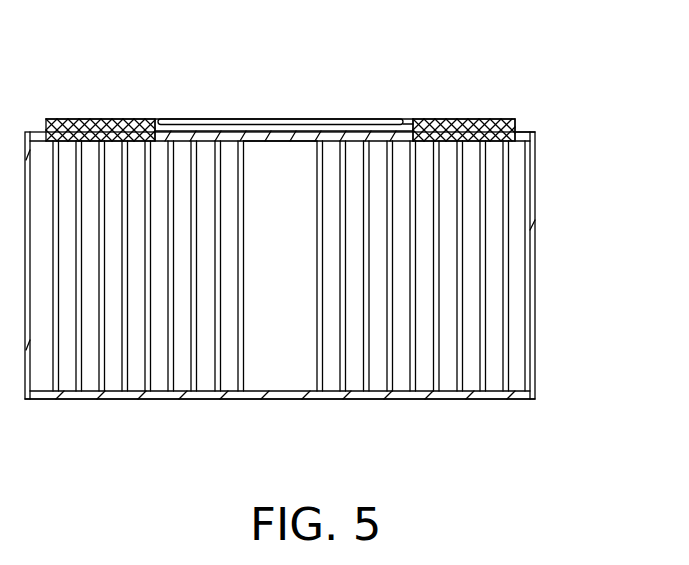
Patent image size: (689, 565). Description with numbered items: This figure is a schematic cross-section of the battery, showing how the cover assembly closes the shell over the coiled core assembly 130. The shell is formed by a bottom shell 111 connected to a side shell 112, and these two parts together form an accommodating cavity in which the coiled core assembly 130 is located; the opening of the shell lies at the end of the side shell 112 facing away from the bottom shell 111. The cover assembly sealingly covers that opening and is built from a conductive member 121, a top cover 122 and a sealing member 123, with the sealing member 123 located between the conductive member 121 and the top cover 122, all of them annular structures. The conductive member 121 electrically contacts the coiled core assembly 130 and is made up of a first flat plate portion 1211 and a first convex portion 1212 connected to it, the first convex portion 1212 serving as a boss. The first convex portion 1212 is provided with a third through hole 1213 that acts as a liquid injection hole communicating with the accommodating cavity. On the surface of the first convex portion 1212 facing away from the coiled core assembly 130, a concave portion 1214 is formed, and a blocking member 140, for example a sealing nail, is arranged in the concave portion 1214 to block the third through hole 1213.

The bottom shell 111 is at (338, 402).
The side shell 112 is at (535, 285).
The conductive member 121 is at (280, 60).
The first flat plate portion 1211 is at (92, 118).
The first convex portion 1212 is at (171, 118).
The third through hole 1213 is at (263, 143).
The concave portion 1214 is at (402, 119).
The top cover 122 is at (516, 131).
The sealing member 123 is at (458, 119).
The coiled core assembly 130 is at (498, 217).
The blocking member 140 is at (277, 119).